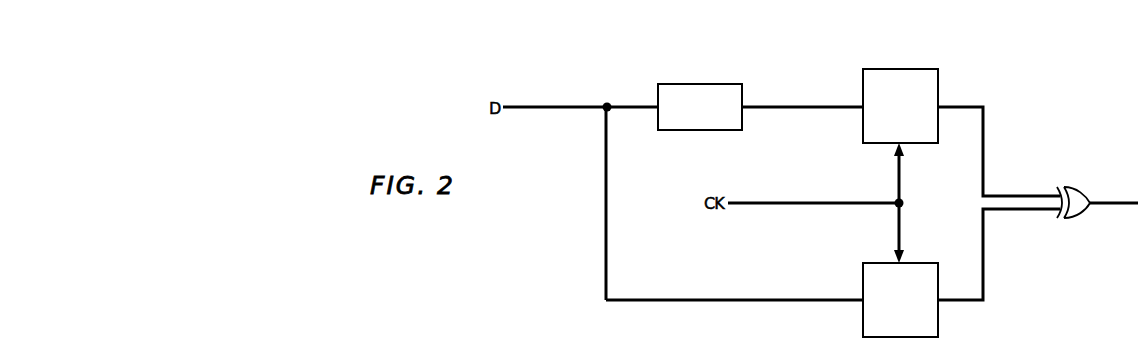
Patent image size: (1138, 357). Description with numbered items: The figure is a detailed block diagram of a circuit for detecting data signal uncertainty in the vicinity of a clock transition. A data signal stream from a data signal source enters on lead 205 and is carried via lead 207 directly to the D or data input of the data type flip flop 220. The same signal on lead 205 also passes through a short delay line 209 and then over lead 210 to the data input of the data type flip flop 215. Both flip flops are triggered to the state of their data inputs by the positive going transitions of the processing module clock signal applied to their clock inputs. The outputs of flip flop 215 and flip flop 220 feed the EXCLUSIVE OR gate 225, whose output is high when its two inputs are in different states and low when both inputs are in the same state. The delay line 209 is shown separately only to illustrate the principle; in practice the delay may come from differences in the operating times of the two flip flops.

The lead 205 is at (529, 106).
The lead 207 is at (751, 299).
The delay line 209 is at (694, 84).
The lead 210 is at (789, 106).
The data type flip flop 215 is at (897, 68).
The data type flip flop 220 is at (880, 262).
The EXCLUSIVE OR gate 225 is at (1084, 192).